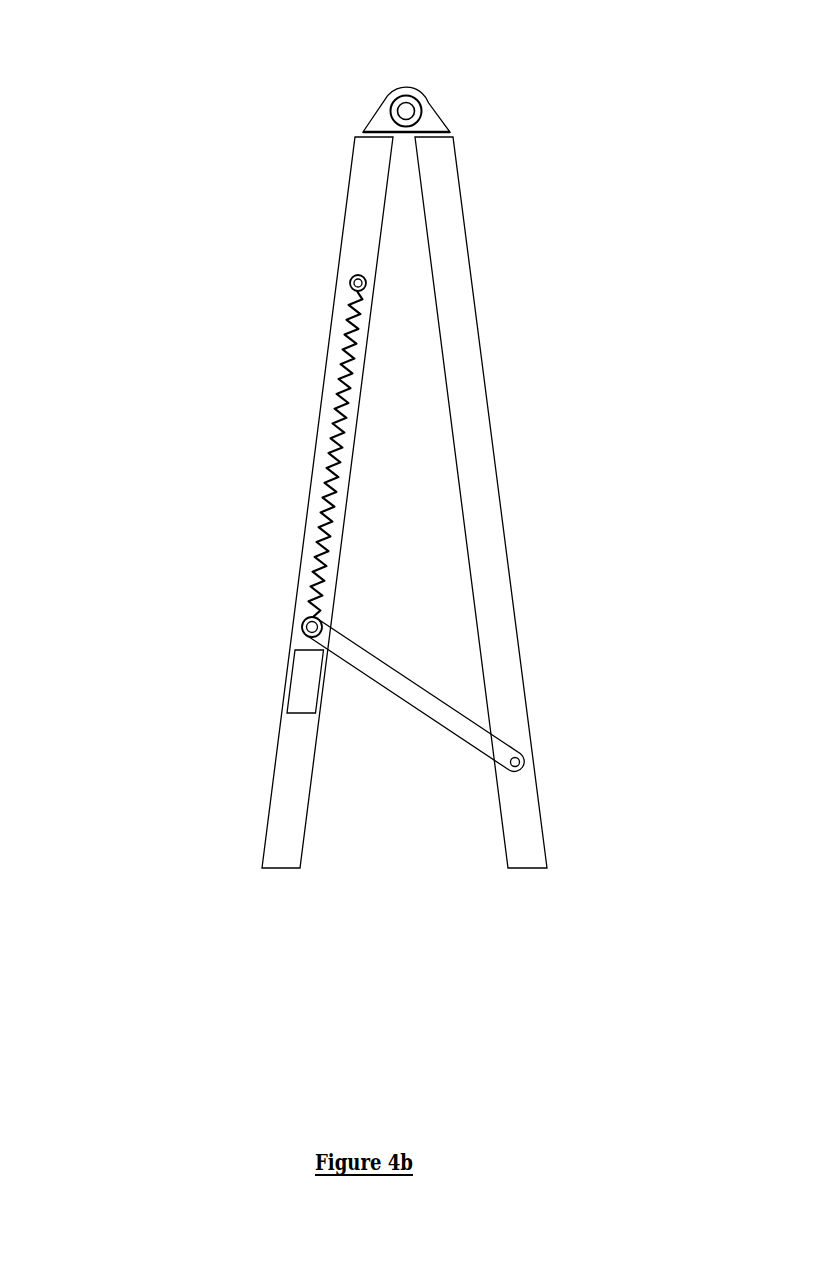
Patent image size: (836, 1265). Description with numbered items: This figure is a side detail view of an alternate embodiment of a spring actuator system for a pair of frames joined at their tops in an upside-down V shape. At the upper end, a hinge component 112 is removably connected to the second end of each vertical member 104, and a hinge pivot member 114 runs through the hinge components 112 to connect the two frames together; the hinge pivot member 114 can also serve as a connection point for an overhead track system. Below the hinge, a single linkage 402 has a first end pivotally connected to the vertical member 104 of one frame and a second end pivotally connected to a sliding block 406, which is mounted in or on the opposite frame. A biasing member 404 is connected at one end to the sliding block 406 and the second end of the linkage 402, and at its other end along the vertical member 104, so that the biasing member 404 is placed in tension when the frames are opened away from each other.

The vertical member 104 is at (482, 482).
The hinge component 112 is at (368, 122).
The hinge pivot member 114 is at (410, 111).
The linkage 402 is at (377, 685).
The biasing member 404 is at (332, 425).
The sliding block 406 is at (298, 645).